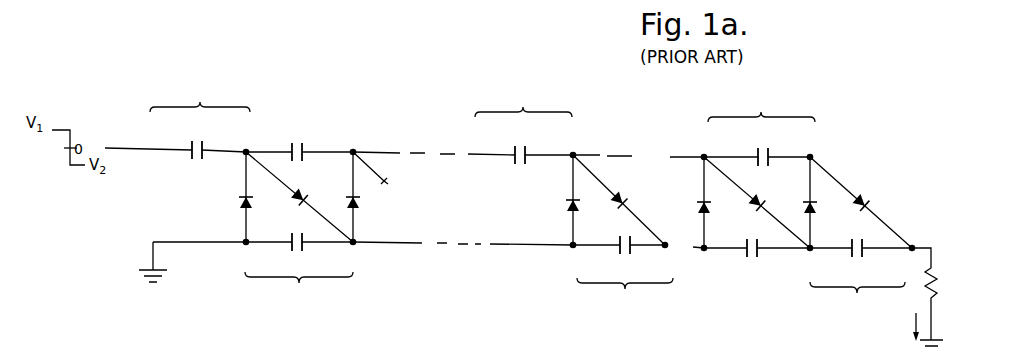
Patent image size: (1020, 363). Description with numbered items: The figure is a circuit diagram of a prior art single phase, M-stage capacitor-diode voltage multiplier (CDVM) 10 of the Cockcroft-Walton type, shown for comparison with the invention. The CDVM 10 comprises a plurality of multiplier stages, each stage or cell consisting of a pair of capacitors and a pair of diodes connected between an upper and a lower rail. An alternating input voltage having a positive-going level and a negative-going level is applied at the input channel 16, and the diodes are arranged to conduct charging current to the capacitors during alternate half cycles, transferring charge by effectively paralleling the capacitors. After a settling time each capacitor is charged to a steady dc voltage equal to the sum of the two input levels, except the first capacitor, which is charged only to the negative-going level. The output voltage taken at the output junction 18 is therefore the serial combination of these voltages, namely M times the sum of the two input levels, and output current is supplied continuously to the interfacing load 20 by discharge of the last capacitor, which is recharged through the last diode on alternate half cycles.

The single phase multistage capacitor-diode voltage multiplier (CDVM) 10 is at (157, 81).
The input channel 16 is at (127, 147).
The output junction 18 is at (913, 240).
The interfacing load 20 is at (925, 288).